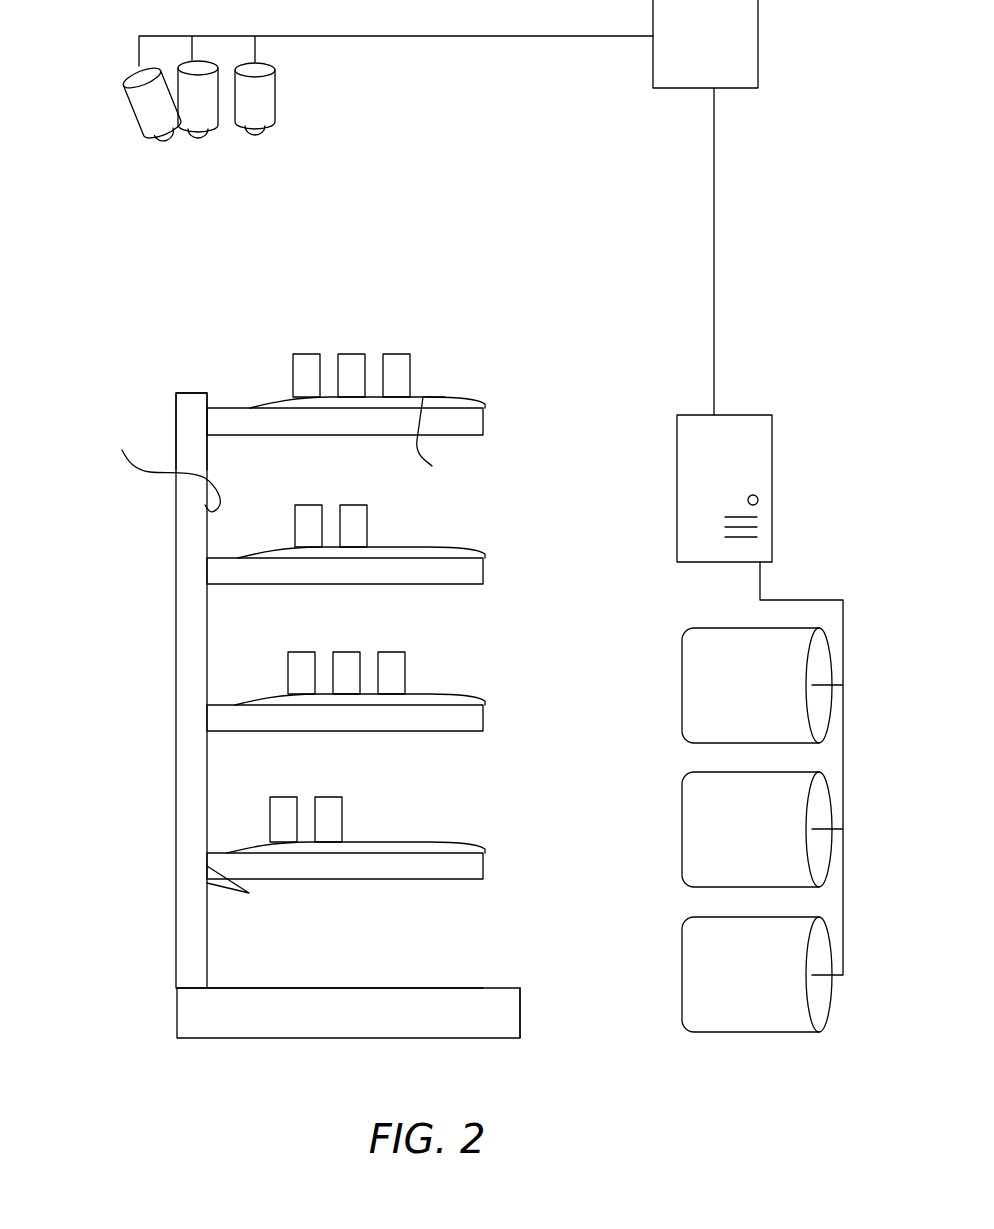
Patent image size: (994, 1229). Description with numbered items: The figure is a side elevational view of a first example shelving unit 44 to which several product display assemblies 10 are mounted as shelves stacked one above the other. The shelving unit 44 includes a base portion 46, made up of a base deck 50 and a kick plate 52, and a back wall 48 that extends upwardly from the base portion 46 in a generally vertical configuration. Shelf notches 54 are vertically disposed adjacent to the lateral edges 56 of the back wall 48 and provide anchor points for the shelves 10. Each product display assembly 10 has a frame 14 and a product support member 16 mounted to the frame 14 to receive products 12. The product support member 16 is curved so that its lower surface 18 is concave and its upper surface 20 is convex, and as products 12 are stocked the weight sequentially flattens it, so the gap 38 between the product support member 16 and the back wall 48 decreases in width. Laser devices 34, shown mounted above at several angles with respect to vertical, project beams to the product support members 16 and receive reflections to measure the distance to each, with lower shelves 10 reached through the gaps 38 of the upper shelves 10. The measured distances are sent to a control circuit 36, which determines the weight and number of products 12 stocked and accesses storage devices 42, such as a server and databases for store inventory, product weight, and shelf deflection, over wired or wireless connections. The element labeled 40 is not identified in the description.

The product display assembly 10 is at (483, 412).
The products 12 is at (308, 354).
The frame 14 is at (452, 425).
The product support member 16 is at (445, 400).
The lower surface 18 is at (438, 441).
The upper surface 20 is at (437, 399).
The laser device 34 is at (157, 140).
The control circuit 36 is at (758, 18).
The gap 38 is at (232, 392).
The shelf bracket 40 is at (163, 468).
The storage devices 42 is at (772, 432).
The shelving unit 44 is at (116, 388).
The base portion 46 is at (497, 1020).
The back wall 48 is at (190, 935).
The base deck 50 is at (460, 988).
The kick plate 52 is at (520, 1012).
The shelf notches 54 is at (249, 893).
The lateral edges 56 is at (190, 418).